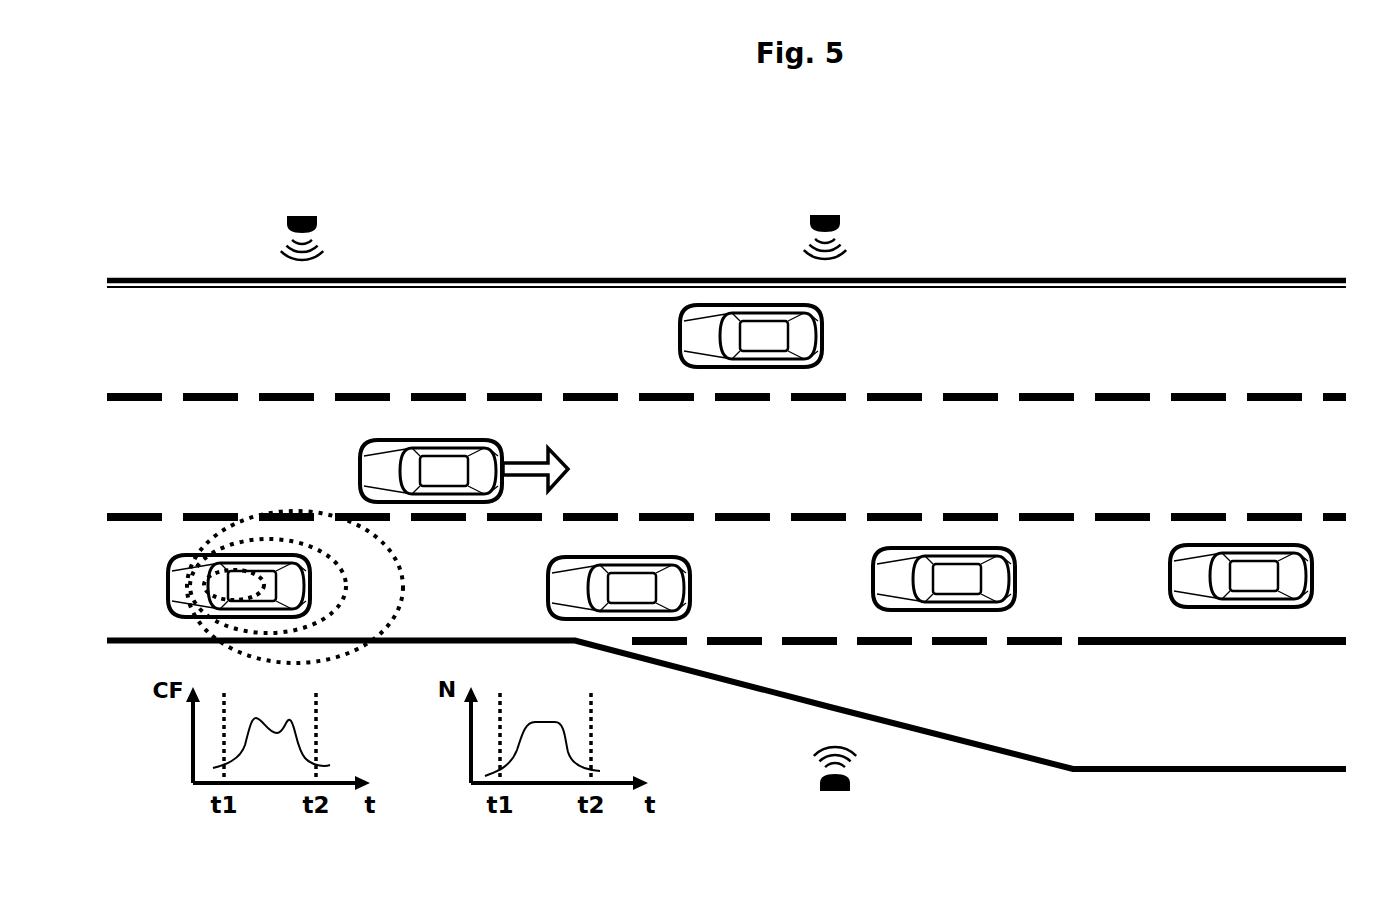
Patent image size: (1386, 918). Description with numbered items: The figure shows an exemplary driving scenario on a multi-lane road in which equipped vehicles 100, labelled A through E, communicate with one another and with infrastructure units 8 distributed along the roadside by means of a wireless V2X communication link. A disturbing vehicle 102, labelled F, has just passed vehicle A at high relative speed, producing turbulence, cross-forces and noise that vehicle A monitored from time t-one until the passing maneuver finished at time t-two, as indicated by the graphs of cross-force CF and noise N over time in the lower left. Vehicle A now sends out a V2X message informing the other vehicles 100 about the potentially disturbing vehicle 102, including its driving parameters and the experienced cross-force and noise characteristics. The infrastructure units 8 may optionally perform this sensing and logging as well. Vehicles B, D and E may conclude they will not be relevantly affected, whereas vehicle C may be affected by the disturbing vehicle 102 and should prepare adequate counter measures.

The infrastructure unit 8 is at (297, 216).
The vehicle 100 is at (702, 311).
The disturbing vehicle 102 is at (360, 462).